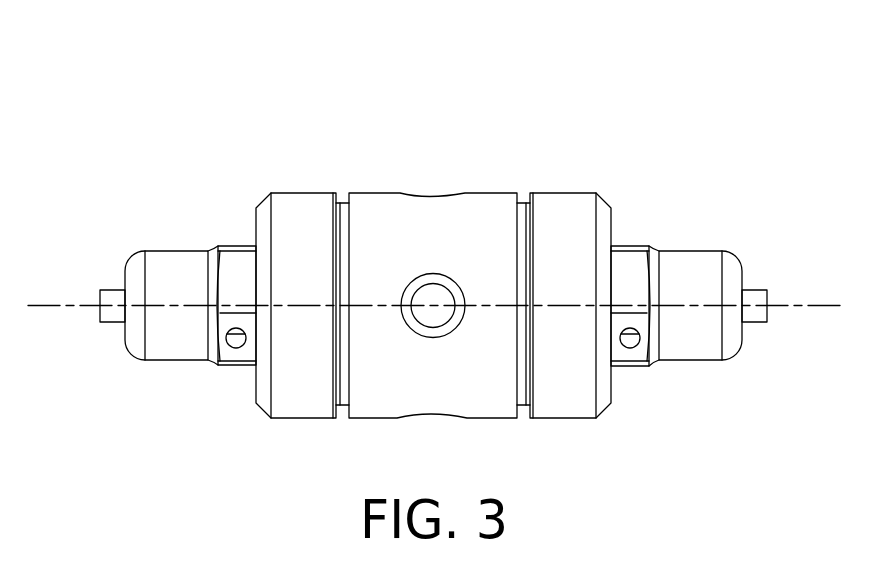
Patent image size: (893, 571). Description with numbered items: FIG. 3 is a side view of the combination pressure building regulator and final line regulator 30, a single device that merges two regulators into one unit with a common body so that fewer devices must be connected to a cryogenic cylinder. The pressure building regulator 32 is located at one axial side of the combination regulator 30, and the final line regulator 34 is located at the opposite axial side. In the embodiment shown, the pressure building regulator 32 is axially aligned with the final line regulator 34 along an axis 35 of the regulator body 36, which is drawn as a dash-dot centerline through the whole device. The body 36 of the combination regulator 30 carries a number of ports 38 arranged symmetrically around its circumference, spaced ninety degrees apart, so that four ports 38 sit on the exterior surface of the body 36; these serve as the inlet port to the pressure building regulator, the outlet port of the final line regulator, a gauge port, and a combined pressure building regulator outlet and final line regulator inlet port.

The combination pressure building regulator and final line regulator 30 is at (492, 133).
The pressure building regulator 32 is at (699, 218).
The final line regulator 34 is at (168, 218).
The axis 35 is at (48, 307).
The regulator body 36 is at (363, 418).
The ports 38 is at (428, 194).